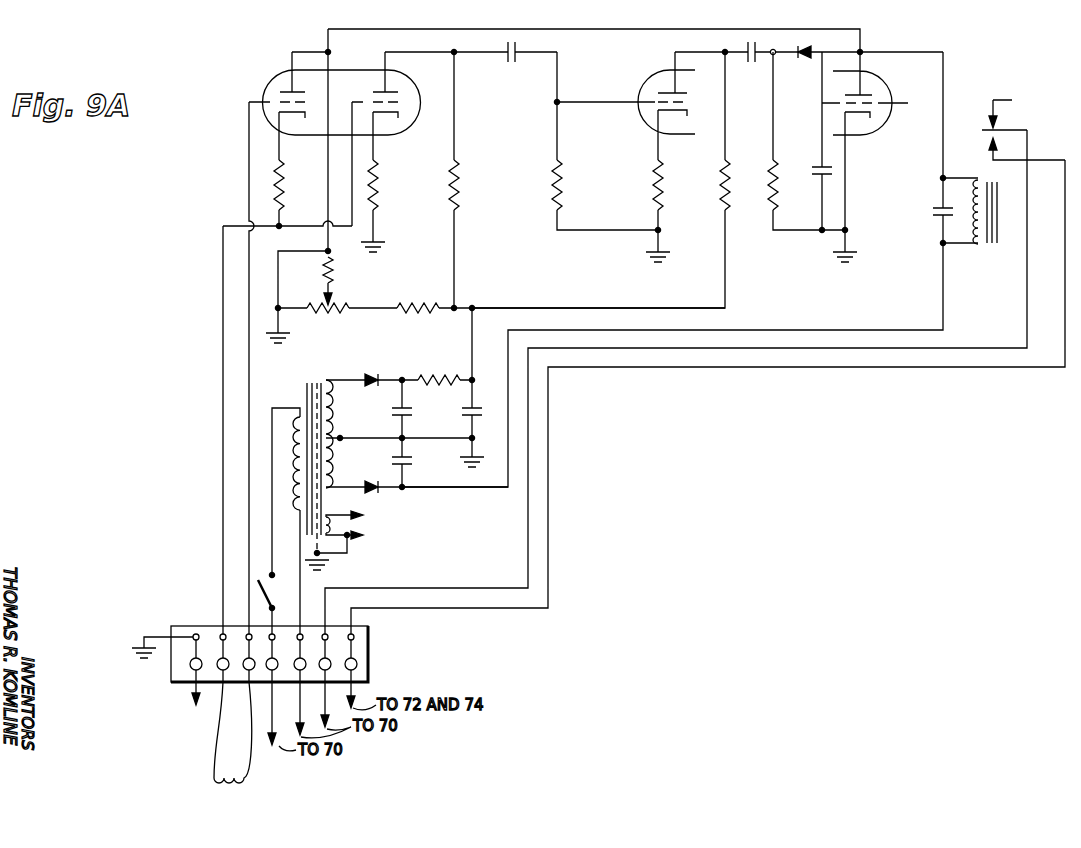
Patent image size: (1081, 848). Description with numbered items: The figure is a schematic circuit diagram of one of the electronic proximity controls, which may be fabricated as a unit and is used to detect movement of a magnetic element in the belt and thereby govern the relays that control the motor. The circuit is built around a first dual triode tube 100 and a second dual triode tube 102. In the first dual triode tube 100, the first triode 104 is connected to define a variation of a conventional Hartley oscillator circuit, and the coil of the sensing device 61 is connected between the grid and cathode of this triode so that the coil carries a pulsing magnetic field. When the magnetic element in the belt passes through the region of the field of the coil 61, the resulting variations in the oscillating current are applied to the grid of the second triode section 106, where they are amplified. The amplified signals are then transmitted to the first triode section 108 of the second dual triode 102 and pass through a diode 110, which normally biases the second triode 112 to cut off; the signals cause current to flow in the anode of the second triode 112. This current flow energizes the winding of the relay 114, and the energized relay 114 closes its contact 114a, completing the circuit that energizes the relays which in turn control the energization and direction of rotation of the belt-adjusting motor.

The first dual triode tube 100 is at (258, 76).
The second dual triode tube 102 is at (845, 68).
The first triode 104 is at (268, 128).
The second triode section 106 is at (411, 96).
The first triode section 108 is at (650, 82).
The diode 110 is at (808, 47).
The second triode 112 is at (890, 120).
The relay 114 is at (975, 248).
The contact 114a is at (982, 146).
The sensing device coil 61 is at (253, 773).